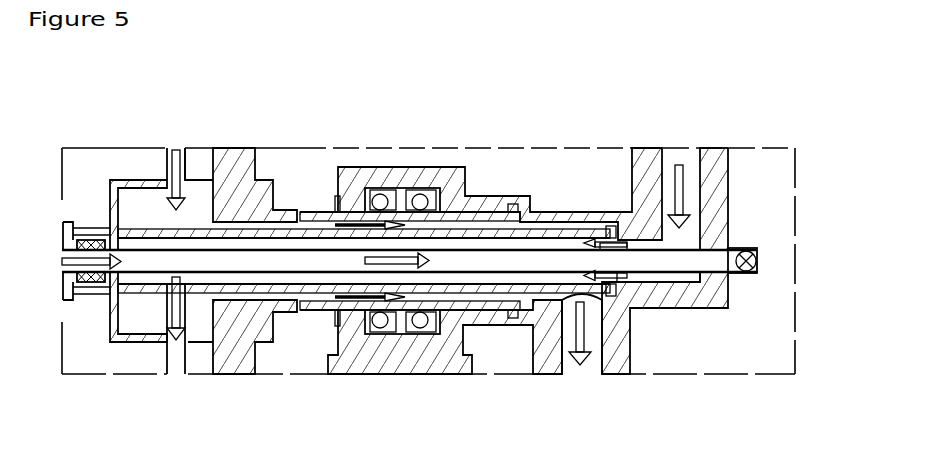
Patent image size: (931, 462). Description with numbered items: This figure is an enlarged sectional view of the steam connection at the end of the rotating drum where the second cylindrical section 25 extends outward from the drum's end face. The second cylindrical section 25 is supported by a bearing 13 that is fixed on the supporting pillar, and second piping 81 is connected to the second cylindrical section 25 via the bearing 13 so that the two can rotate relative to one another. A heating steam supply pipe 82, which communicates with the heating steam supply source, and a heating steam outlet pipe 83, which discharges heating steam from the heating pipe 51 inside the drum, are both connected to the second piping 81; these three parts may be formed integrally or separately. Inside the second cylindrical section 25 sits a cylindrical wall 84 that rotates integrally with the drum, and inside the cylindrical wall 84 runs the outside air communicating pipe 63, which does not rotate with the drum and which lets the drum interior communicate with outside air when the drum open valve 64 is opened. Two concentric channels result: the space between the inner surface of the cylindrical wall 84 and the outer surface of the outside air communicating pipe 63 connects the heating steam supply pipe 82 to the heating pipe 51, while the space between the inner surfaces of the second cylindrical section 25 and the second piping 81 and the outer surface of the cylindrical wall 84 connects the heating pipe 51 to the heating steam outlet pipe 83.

The bearing 13 is at (403, 190).
The second cylindrical section 25 is at (297, 210).
The heating pipe 51 is at (165, 167).
The outside air communicating pipe 63 is at (277, 262).
The drum open valve 64 is at (745, 248).
The second piping 81 is at (507, 197).
The heating steam supply pipe 82 is at (707, 157).
The heating steam outlet pipe 83 is at (618, 357).
The cylindrical wall 84 is at (557, 237).